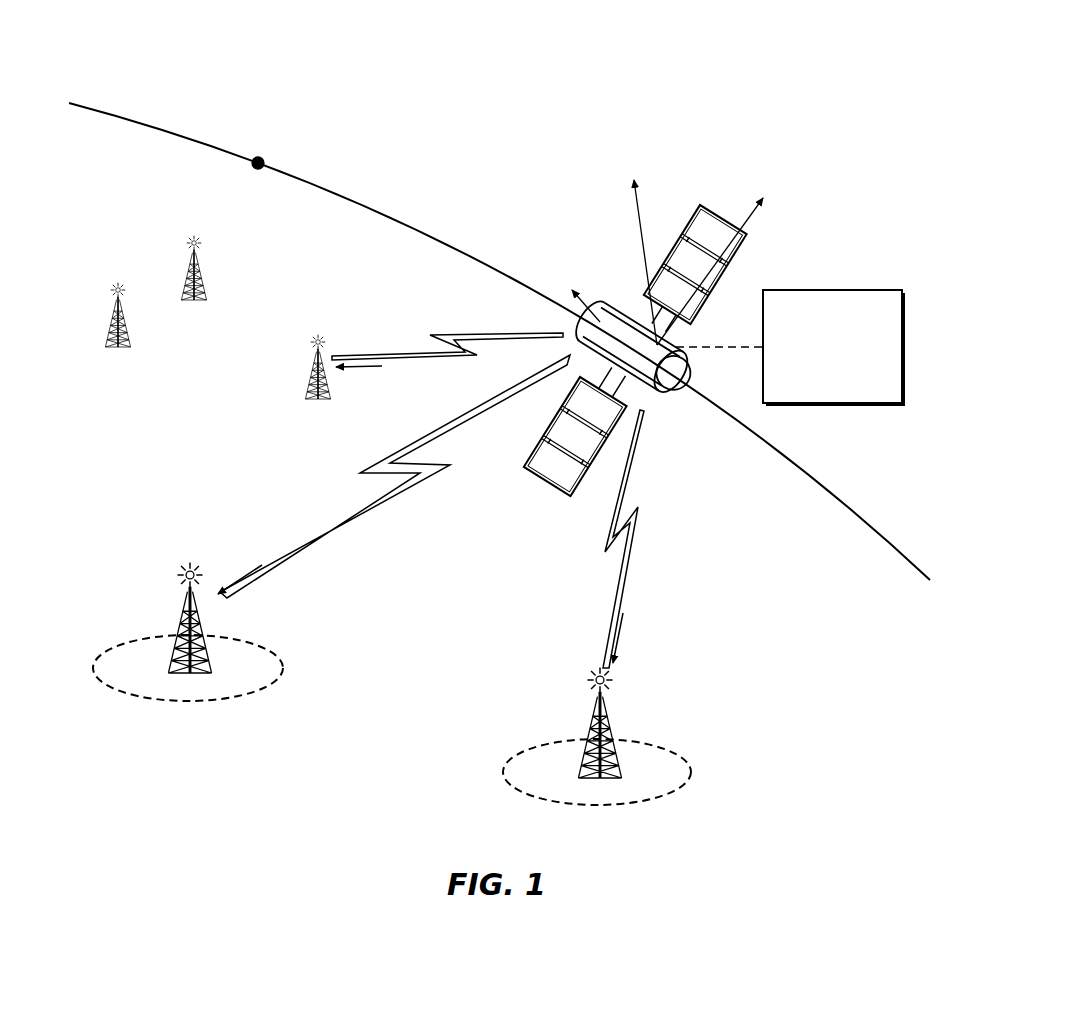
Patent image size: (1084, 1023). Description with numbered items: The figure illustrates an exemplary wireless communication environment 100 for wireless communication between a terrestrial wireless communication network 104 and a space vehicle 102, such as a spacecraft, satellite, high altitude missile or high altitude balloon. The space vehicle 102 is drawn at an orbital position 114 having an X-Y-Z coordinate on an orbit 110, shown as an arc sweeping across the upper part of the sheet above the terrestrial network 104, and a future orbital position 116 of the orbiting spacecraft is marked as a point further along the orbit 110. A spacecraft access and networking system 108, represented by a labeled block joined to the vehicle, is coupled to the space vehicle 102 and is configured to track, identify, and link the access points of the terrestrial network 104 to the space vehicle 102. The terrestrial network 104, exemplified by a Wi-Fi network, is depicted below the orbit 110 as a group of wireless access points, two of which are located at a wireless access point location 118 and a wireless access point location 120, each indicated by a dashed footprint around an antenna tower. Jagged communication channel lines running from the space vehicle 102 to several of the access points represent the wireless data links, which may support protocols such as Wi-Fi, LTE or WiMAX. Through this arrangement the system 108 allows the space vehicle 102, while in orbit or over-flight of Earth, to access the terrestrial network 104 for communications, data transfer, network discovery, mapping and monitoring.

The wireless communication environment 100 is at (763, 57).
The space vehicle 102 is at (650, 320).
The terrestrial wireless communication network 104 is at (256, 814).
The spacecraft access and networking system 108 is at (870, 290).
The orbit 110 is at (415, 221).
The orbital position 114 is at (672, 390).
The future orbital position 116 is at (258, 158).
The wireless access point location 118 is at (282, 678).
The wireless access point location 120 is at (694, 768).